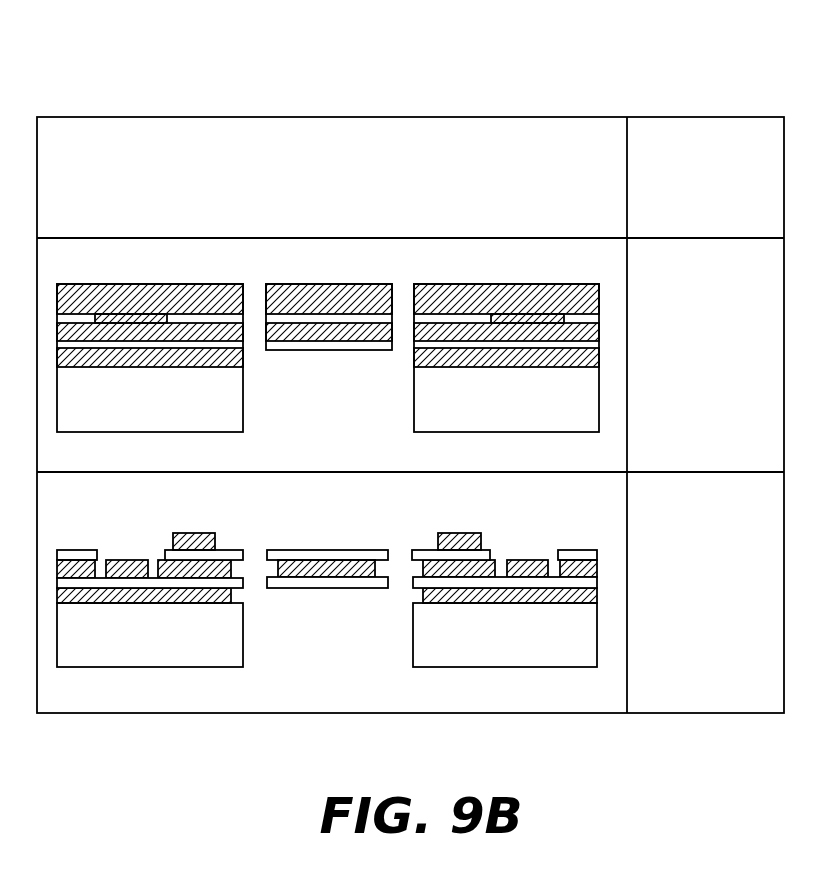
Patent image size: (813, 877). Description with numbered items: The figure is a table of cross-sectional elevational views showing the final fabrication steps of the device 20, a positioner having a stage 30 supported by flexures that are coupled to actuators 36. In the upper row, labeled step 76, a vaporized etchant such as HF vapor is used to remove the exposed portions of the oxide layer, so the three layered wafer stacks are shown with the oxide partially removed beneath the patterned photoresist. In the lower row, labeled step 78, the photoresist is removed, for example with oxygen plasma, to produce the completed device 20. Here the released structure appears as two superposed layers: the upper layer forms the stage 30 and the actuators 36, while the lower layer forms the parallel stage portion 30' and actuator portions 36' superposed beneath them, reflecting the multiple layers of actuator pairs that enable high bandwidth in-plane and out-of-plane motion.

The device 20 is at (409, 72).
The oxide removal step 76 is at (690, 369).
The photoresist removal step 78 is at (690, 606).
The stage 30 is at (327, 529).
The superposed stage layer 30' is at (327, 614).
The actuator 36 is at (327, 521).
The superposed actuator layer 36' is at (327, 614).